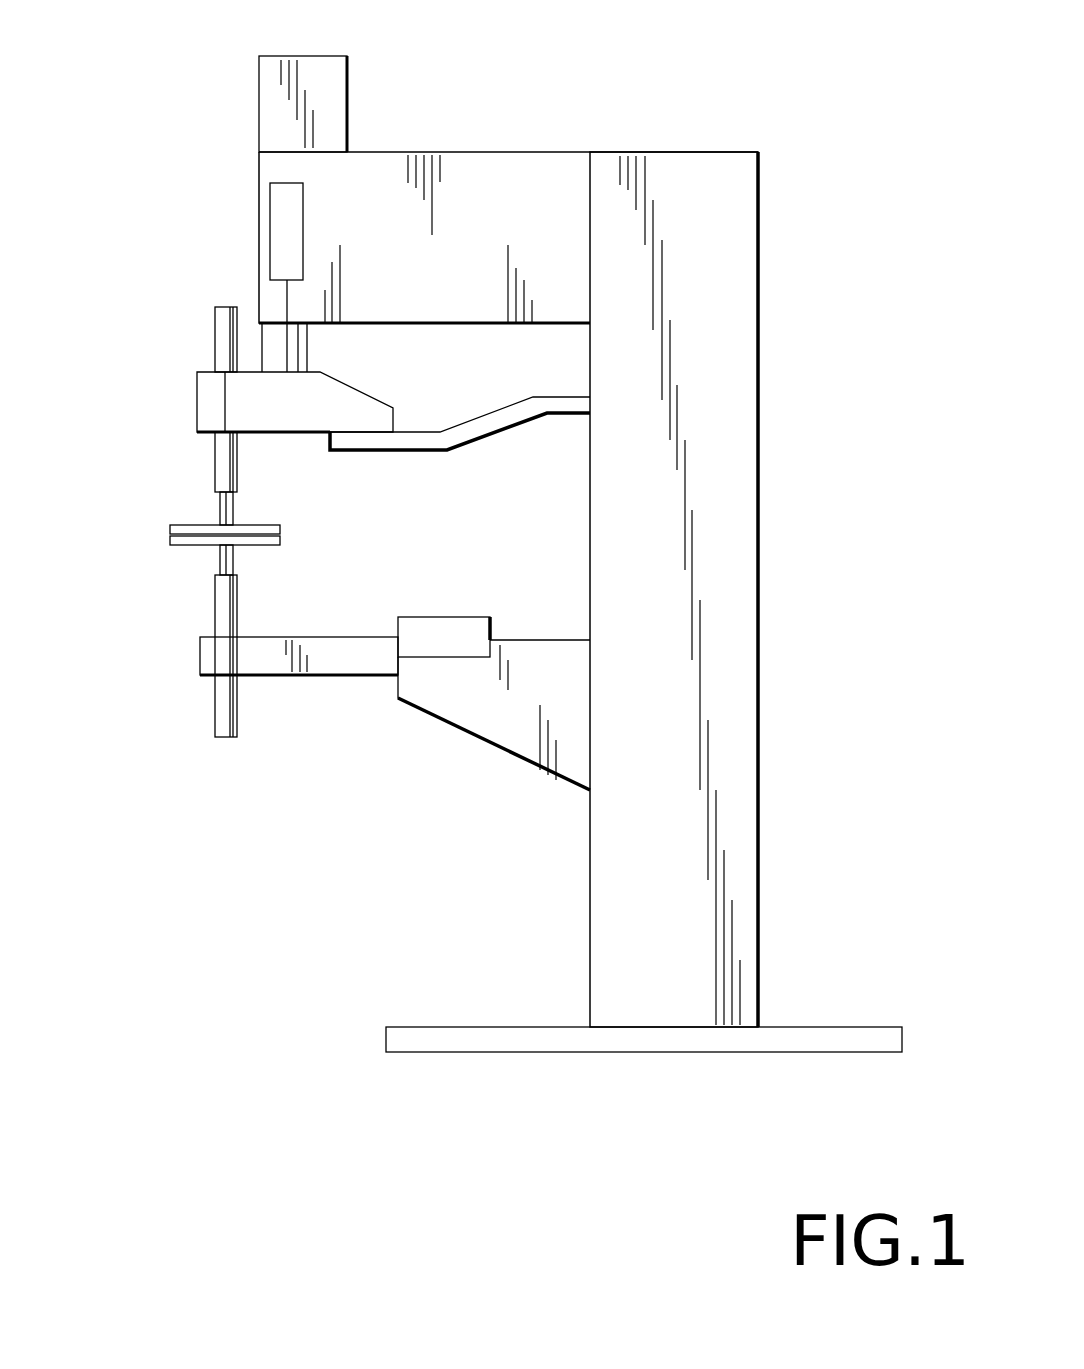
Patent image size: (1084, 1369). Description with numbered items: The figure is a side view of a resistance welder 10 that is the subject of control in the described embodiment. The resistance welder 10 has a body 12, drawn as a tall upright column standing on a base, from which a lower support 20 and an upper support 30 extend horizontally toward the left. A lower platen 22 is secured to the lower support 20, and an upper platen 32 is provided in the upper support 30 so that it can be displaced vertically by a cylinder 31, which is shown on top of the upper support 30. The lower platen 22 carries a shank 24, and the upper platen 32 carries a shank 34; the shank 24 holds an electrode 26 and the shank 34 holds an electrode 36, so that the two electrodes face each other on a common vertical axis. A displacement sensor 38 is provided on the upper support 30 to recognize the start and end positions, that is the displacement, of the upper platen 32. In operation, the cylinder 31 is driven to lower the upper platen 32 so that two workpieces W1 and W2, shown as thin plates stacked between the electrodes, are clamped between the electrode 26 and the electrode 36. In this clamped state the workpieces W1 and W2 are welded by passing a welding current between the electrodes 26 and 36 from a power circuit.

The resistance welder 10 is at (795, 478).
The body 12 is at (738, 893).
The lower support 20 is at (480, 720).
The lower platen 22 is at (197, 663).
The shank 24 is at (223, 603).
The electrode 26 is at (217, 558).
The upper support 30 is at (499, 168).
The cylinder 31 is at (267, 100).
The upper platen 32 is at (233, 400).
The shank 34 is at (220, 462).
The electrode 36 is at (220, 510).
The displacement sensor 38 is at (273, 240).
The workpiece W1 is at (260, 524).
The workpiece W2 is at (260, 546).